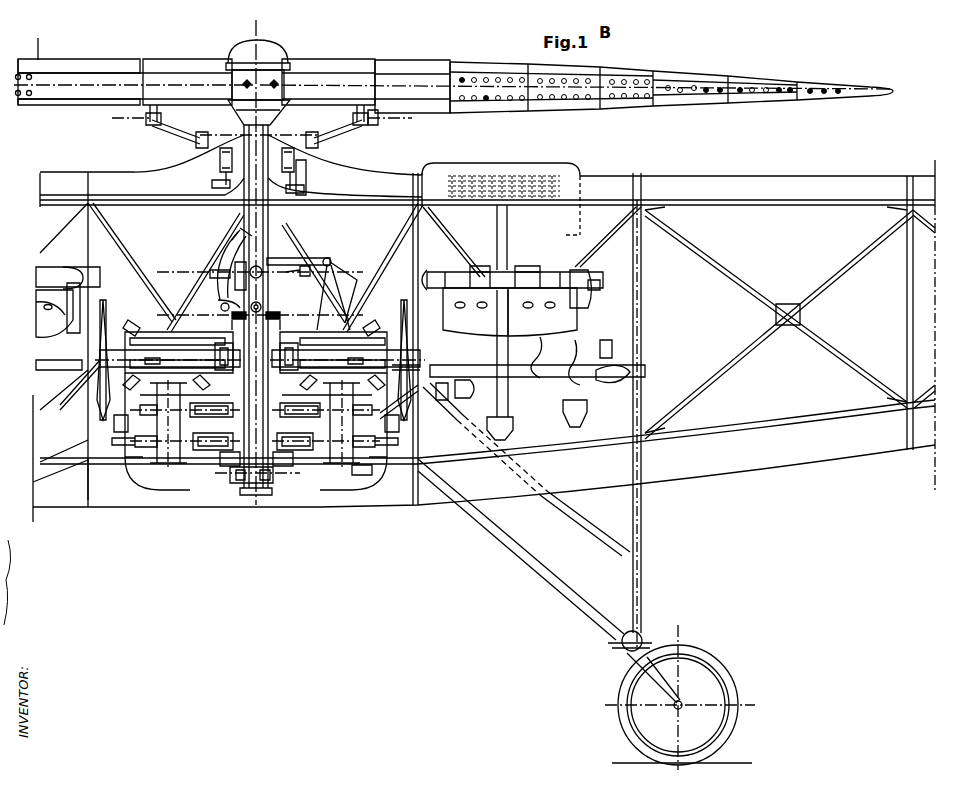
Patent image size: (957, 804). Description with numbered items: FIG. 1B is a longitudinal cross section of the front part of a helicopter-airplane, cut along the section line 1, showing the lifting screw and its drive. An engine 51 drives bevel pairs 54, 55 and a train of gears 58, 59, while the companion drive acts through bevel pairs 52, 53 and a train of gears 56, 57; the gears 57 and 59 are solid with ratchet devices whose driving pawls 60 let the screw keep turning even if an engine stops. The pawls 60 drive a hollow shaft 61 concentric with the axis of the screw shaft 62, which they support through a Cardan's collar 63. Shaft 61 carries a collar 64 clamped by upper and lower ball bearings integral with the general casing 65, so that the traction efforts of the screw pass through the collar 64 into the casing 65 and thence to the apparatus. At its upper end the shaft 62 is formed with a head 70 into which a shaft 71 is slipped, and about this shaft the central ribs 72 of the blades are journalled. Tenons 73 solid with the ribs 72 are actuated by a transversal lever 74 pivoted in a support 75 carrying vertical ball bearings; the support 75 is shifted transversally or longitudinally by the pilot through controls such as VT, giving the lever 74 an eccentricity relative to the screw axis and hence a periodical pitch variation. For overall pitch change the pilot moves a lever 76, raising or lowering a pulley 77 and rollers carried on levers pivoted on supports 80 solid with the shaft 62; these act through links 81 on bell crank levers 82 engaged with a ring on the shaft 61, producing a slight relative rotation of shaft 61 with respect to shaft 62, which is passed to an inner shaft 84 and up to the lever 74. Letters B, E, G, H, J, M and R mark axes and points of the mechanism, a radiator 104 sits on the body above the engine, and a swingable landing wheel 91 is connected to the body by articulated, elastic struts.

The section line 1 is at (27, 279).
The engine 51 is at (562, 317).
The bevel pair 52 is at (128, 330).
The bevel pair 53 is at (168, 355).
The bevel pair 54 is at (372, 330).
The bevel pair 55 is at (406, 383).
The train of gears 56 is at (140, 445).
The gear 57 is at (195, 440).
The train of gears 58 is at (375, 445).
The gear 59 is at (355, 470).
The driving pawl 60 is at (205, 455).
The hollow shaft 61 is at (260, 482).
The screw shaft 62 is at (270, 210).
The Cardan's collar 63 is at (235, 485).
The collar 64 is at (255, 416).
The general casing 65 is at (150, 290).
The head 70 is at (283, 63).
The shaft 71 is at (160, 70).
The central rib 72 is at (103, 63).
The tenon 73 is at (374, 118).
The transversal lever 74 is at (160, 128).
The support 75 is at (220, 165).
The lever 76 is at (304, 258).
The pulley 77 is at (235, 236).
The support 80 is at (213, 272).
The link 81 is at (222, 305).
The bell crank lever 82 is at (230, 262).
The inner shaft 84 is at (282, 468).
The swingable landing wheel 91 is at (621, 683).
The radiator 104 is at (560, 195).
The axis B is at (259, 134).
The axis E is at (260, 262).
The point G is at (254, 297).
The axis H is at (260, 317).
The point J is at (152, 410).
The point M is at (252, 314).
The point R is at (253, 482).
The point of arrival of the controls for transversal periodical pitch variation VT is at (308, 171).